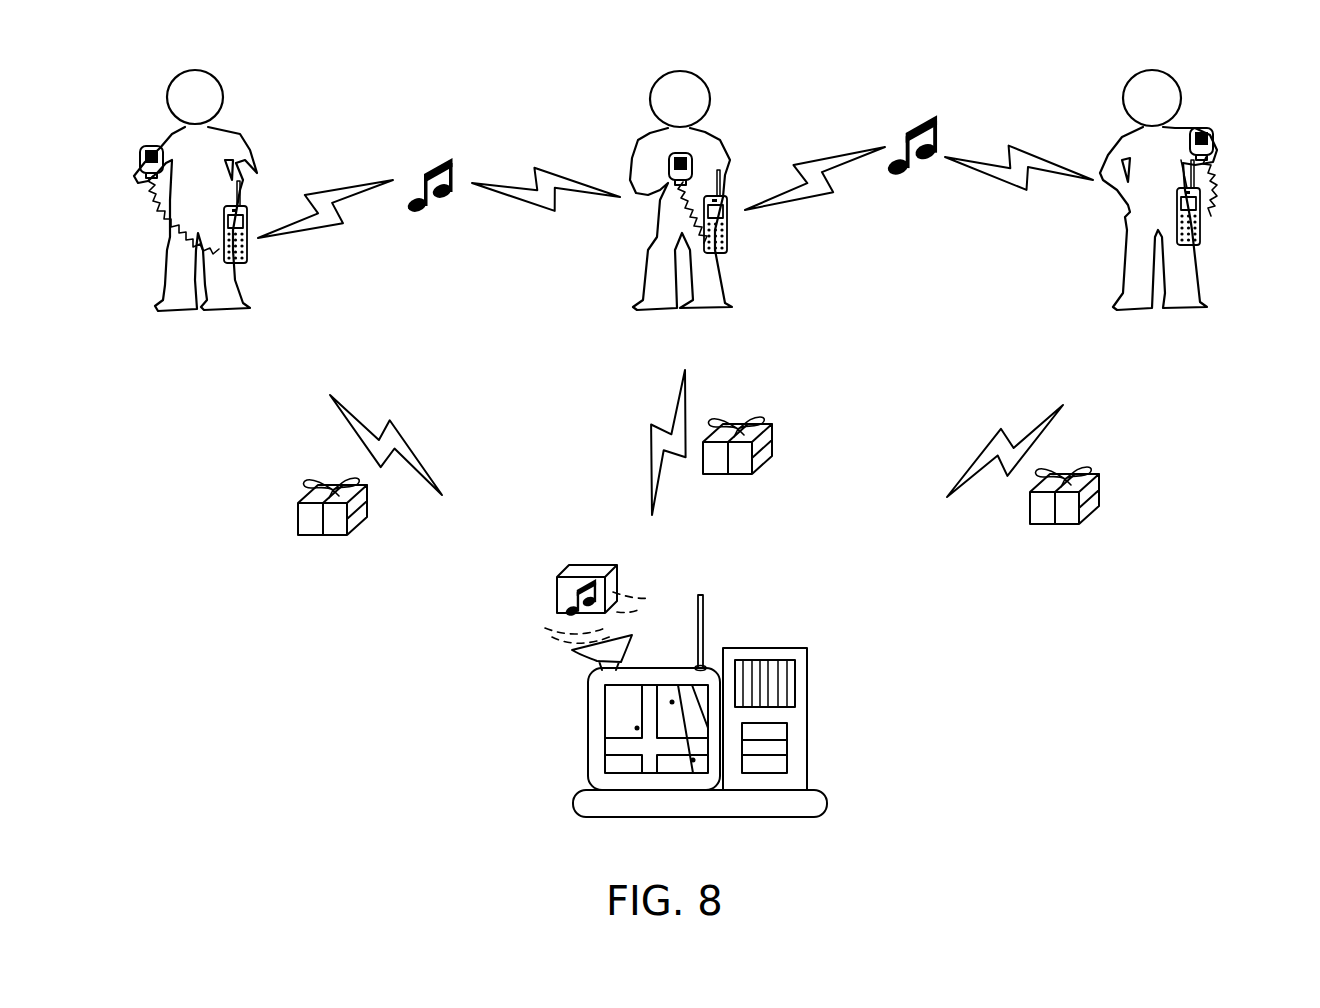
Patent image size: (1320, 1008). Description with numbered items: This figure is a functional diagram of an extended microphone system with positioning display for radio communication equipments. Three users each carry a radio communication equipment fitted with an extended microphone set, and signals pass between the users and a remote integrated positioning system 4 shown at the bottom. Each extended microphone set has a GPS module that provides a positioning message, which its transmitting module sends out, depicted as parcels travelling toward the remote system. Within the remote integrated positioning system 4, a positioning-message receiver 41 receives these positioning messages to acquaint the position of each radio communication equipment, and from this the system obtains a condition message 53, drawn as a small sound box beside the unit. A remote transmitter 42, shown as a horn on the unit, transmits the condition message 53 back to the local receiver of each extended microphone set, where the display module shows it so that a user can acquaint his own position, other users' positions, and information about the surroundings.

The remote integrated positioning system 4 is at (738, 701).
The positioning-message receiver 41 is at (705, 622).
The remote transmitter 42 is at (572, 652).
The condition message 53 is at (557, 594).